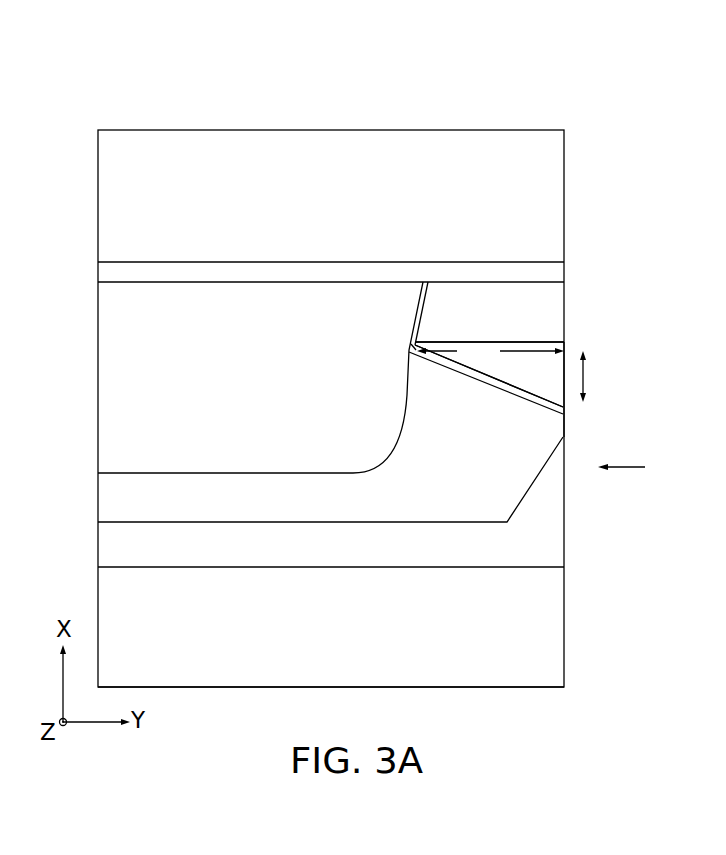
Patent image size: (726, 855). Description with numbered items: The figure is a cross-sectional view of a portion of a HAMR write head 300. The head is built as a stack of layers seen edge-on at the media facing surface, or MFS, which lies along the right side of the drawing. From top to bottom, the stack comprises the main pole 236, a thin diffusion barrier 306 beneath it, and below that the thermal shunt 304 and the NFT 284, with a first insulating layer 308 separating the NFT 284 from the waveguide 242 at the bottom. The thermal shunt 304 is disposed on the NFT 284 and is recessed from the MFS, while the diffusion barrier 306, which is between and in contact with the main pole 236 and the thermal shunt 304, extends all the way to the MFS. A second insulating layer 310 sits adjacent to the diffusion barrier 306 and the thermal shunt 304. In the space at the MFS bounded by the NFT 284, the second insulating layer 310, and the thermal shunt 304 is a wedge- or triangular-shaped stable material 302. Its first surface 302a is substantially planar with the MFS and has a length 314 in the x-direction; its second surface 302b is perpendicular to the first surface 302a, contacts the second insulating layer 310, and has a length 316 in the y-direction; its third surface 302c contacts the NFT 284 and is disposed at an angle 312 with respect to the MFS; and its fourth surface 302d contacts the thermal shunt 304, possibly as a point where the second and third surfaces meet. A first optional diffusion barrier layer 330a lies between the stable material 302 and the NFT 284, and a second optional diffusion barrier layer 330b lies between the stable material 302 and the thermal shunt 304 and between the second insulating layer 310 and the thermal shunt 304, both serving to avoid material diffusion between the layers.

The HAMR write head 300 is at (138, 92).
The main pole 236 is at (350, 232).
The diffusion barrier 306 is at (552, 273).
The thermal shunt 304 is at (233, 367).
The second optional diffusion barrier layer 330b is at (414, 322).
The first optional diffusion barrier layer 330a is at (521, 397).
The second insulating layer 310 is at (483, 311).
The stable material 302 is at (543, 382).
The first surface 302a is at (565, 352).
The second surface 302b is at (468, 342).
The third surface 302c is at (468, 377).
The fourth surface 302d is at (410, 348).
The length of the second surface 316 is at (490, 358).
The length of the first surface 314 is at (606, 376).
The angle of the third surface 312 is at (548, 384).
The NFT 284 is at (425, 496).
The first insulating layer 308 is at (288, 556).
The waveguide 242 is at (312, 651).
The media facing surface MFS is at (649, 465).